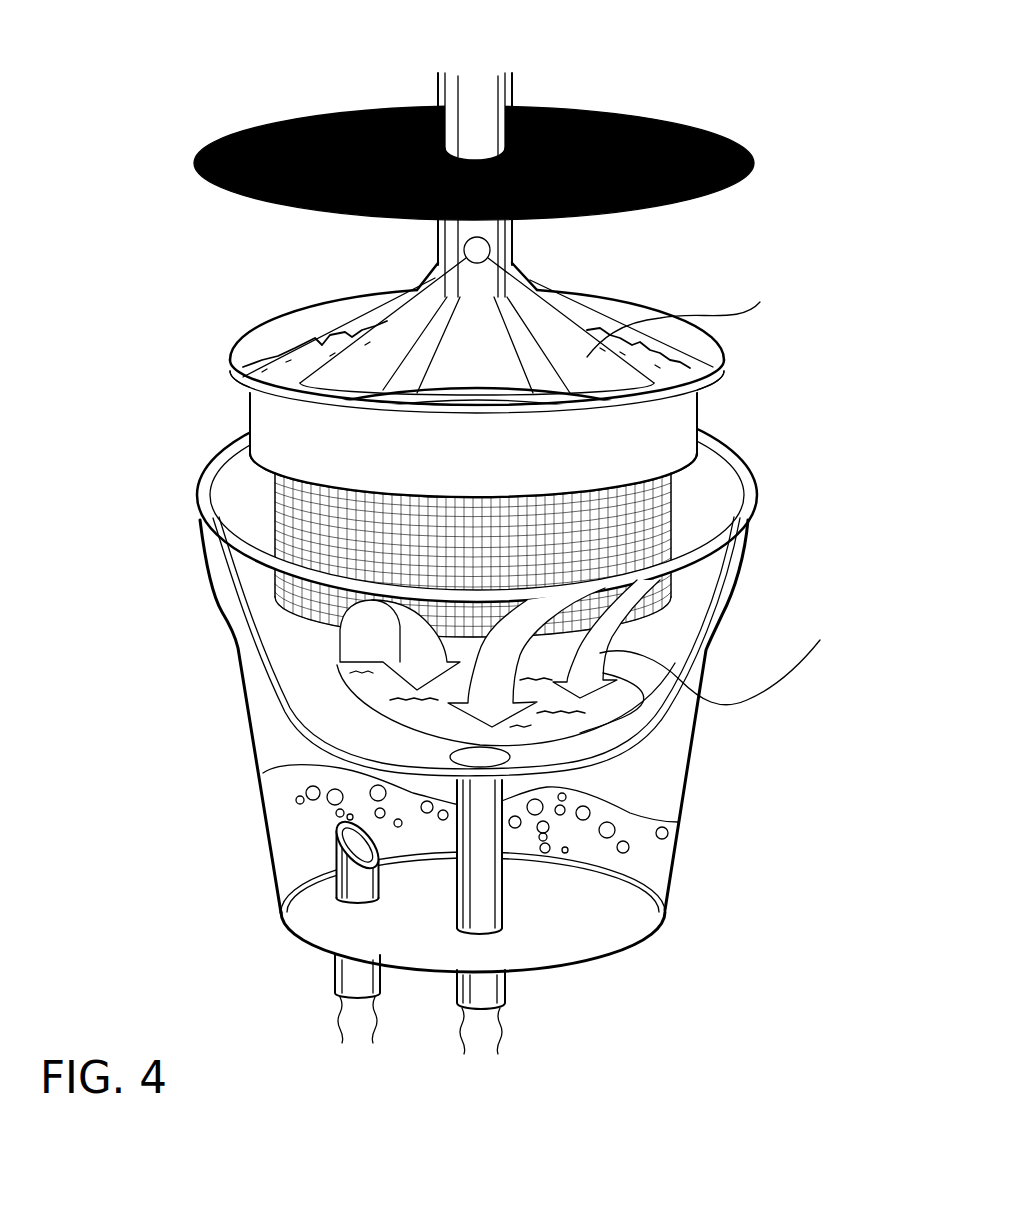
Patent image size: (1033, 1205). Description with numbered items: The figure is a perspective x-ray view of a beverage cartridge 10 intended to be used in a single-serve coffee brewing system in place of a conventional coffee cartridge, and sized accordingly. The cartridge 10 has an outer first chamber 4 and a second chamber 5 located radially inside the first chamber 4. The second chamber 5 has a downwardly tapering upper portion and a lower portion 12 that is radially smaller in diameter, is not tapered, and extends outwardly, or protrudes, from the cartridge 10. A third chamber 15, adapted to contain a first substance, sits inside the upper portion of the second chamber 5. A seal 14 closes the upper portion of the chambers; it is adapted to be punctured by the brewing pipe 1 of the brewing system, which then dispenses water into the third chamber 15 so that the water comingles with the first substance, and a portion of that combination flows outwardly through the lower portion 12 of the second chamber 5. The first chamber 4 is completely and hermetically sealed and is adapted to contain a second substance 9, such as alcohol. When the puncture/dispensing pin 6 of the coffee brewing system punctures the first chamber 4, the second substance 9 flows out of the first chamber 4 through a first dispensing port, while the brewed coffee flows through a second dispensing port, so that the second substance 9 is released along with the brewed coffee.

The cartridge 10 is at (130, 72).
The brewing pipe 1 is at (493, 90).
The seal 14 is at (407, 110).
The third chamber 15 is at (282, 497).
The second chamber 5 is at (233, 497).
The first chamber 4 is at (268, 725).
The second substance 9 is at (633, 813).
The puncture/dispensing pin 6 is at (360, 870).
The lower portion 12 is at (477, 880).